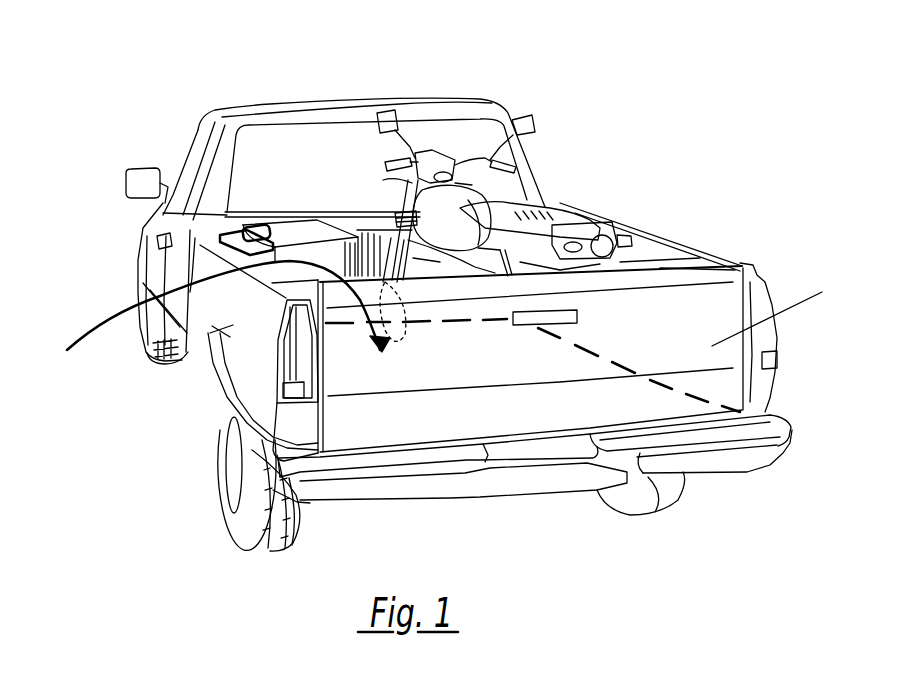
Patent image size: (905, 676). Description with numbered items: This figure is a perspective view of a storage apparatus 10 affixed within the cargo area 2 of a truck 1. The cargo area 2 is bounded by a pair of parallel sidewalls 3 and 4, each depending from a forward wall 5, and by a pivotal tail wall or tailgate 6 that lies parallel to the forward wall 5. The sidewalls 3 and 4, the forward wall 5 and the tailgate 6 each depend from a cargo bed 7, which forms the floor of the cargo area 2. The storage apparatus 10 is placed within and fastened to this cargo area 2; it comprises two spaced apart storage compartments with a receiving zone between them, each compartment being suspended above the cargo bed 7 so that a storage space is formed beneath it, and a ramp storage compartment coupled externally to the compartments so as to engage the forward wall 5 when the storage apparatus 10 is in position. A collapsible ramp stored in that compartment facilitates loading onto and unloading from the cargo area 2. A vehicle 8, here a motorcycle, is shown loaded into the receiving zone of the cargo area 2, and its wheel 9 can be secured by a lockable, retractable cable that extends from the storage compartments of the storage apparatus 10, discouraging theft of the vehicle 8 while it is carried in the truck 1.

The truck 1 is at (440, 72).
The cargo area 2 is at (663, 262).
The sidewall 3 is at (653, 255).
The sidewall 4 is at (235, 327).
The forward wall 5 is at (257, 237).
The tailgate 6 is at (797, 284).
The cargo bed 7 is at (206, 330).
The vehicle 8 is at (552, 121).
The wheel 9 is at (382, 245).
The storage apparatus 10 is at (258, 218).